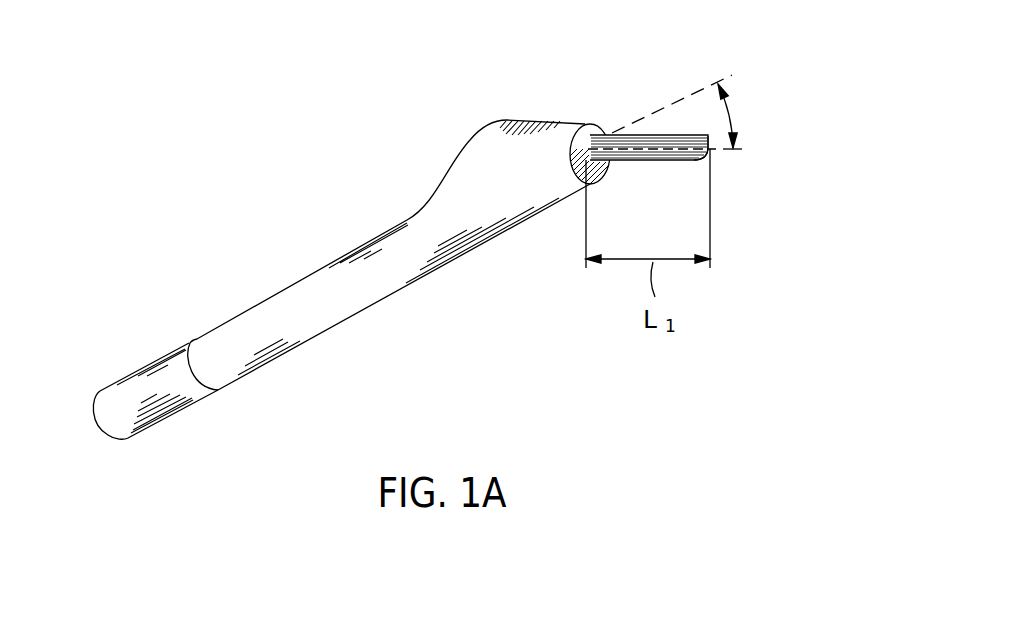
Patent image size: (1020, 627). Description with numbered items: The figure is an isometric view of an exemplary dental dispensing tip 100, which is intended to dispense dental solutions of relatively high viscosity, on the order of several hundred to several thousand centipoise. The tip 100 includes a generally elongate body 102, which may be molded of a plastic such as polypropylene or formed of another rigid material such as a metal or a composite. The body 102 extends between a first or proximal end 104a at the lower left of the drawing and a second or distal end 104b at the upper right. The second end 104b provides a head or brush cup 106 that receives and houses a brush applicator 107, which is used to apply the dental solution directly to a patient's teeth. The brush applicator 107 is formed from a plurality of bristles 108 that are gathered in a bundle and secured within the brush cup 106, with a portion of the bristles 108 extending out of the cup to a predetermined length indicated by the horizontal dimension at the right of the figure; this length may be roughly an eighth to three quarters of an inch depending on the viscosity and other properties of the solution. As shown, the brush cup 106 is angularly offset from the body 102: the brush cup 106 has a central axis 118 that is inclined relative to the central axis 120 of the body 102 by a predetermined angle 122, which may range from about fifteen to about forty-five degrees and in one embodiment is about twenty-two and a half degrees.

The dental dispensing tip 100 is at (455, 229).
The elongate body 102 is at (337, 311).
The first end 104a is at (119, 365).
The second end 104b is at (559, 217).
The brush cup 106 is at (537, 122).
The brush applicator 107 is at (722, 155).
The bristles 108 is at (660, 163).
The central axis 118 is at (619, 150).
The central axis 120 is at (697, 92).
The angle 122 is at (735, 110).